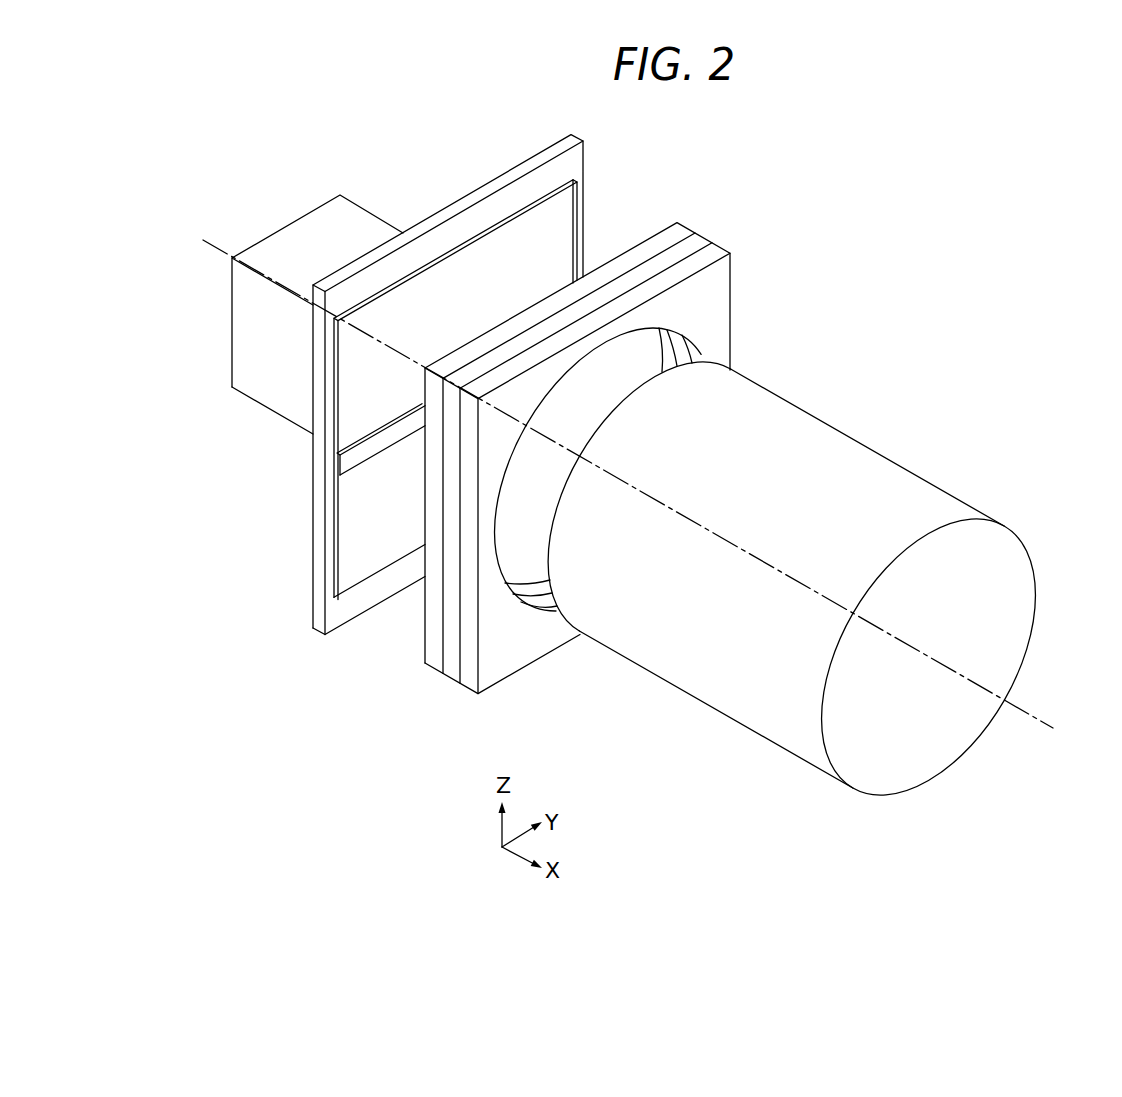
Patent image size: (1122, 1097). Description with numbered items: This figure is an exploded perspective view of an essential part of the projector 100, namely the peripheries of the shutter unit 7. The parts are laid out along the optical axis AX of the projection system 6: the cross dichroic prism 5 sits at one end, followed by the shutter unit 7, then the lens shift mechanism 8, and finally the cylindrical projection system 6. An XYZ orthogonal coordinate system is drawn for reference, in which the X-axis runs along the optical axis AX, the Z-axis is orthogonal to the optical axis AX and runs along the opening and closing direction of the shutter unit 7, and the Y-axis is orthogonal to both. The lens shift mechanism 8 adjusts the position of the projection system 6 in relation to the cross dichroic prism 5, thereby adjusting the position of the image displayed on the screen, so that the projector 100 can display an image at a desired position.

The projector 100 is at (872, 239).
The cross dichroic prism 5 is at (268, 426).
The projection system 6 is at (822, 443).
The shutter unit 7 is at (311, 640).
The lens shift mechanism 8 is at (437, 698).
The optical axis AX is at (657, 484).